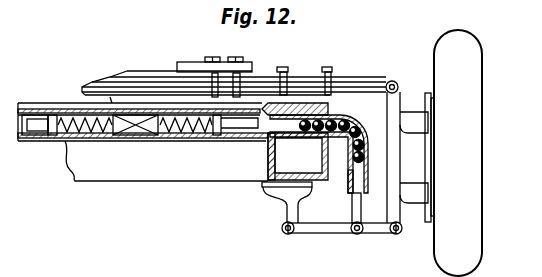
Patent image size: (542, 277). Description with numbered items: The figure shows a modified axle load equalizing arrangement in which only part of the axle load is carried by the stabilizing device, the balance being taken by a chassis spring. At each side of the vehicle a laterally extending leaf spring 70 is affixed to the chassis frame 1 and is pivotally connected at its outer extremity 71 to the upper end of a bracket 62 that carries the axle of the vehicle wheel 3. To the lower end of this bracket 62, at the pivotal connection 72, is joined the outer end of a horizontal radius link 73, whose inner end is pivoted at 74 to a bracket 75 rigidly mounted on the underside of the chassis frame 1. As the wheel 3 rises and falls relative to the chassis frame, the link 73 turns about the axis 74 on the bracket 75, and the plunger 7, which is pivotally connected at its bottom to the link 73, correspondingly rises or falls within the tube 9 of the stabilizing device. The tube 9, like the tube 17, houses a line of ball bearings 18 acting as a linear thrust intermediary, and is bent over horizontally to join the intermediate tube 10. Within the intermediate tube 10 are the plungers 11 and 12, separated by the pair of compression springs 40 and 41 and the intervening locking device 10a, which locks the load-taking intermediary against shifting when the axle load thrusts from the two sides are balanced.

The chassis frame 1 is at (270, 160).
The vehicle wheel 3 is at (468, 148).
The plunger 7 is at (357, 200).
The tube 9 is at (347, 190).
The intermediate tube 10 is at (92, 142).
The locking device 10a is at (140, 141).
The plunger 11 is at (49, 141).
The plunger 12 is at (222, 137).
The tube 17 is at (350, 117).
The line of ball bearings 18 is at (320, 137).
The compression spring 40 is at (75, 114).
The compression spring 41 is at (194, 142).
The bracket 62 is at (395, 137).
The leaf spring 70 is at (293, 82).
The outer extremity of leaf spring 71 is at (395, 82).
The pivot pin 72 is at (397, 234).
The horizontal radius link 73 is at (354, 234).
The inner end pivot 74 is at (289, 234).
The bracket 75 is at (286, 203).